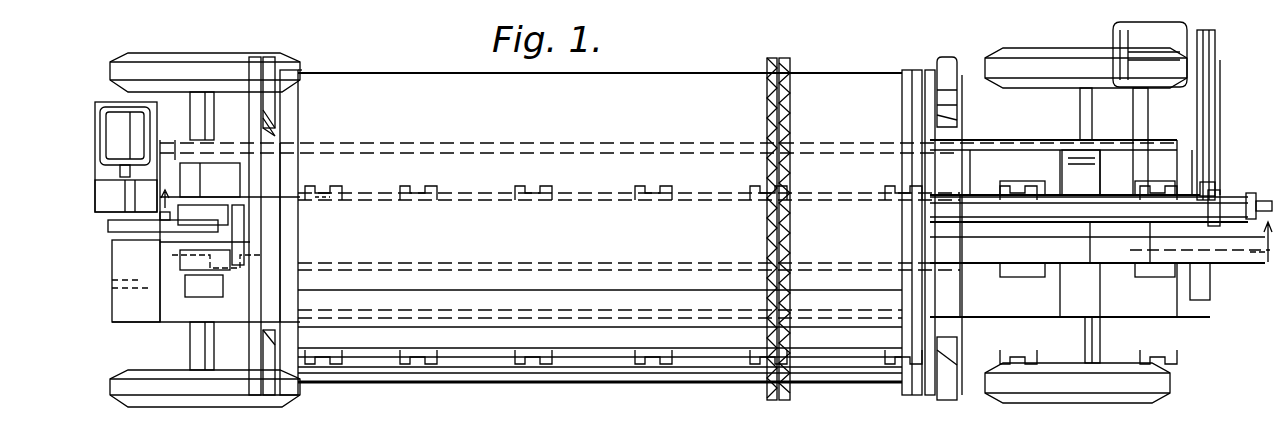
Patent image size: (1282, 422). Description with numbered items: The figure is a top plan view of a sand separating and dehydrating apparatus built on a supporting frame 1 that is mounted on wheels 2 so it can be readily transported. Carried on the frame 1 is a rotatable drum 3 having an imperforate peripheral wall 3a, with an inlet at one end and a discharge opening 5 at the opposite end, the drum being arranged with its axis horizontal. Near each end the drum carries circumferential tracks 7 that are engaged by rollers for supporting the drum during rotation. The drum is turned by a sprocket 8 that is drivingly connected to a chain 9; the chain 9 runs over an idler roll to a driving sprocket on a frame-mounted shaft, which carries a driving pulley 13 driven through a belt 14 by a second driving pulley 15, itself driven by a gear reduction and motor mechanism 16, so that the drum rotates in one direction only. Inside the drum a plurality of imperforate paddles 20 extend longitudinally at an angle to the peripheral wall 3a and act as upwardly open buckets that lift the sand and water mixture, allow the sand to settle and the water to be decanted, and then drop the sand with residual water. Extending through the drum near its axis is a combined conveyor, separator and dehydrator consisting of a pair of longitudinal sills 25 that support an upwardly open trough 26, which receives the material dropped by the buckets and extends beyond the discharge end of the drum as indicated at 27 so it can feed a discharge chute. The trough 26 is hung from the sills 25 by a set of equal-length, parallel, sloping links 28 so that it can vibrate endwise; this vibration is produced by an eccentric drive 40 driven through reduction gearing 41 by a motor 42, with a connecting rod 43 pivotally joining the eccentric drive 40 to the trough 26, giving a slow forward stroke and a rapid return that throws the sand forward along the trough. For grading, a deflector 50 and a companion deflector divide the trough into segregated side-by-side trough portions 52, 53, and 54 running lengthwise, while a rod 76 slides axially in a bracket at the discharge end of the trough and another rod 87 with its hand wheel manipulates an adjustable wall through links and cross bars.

The supporting frame 1 is at (1004, 140).
The wheels 2 is at (196, 52).
The rotatable drum 3 is at (370, 73).
The imperforate peripheral wall 3a is at (602, 420).
The discharge opening 5 is at (1256, 262).
The circumferential tracks 7 is at (300, 73).
The sprocket 8 is at (784, 66).
The chain 9 is at (766, 66).
The driving pulley 13 is at (1216, 178).
The belt 14 is at (1210, 120).
The driving pulley 15 is at (1216, 48).
The gear reduction and motor mechanism 16 is at (1114, 32).
The imperforate paddles 20 is at (492, 420).
The longitudinal sills 25 is at (196, 198).
The trough 26 is at (454, 190).
The trough extension 27 is at (1240, 265).
The links 28 is at (660, 188).
The eccentric drive 40 is at (110, 225).
The reduction gearing 41 is at (108, 196).
The motor 42 is at (105, 131).
The connecting rod 43 is at (118, 240).
The deflector 50 is at (1228, 268).
The trough portion 52 is at (1205, 281).
The trough portion 53 is at (1220, 202).
The trough portion 54 is at (1200, 165).
The rod 76 is at (1100, 222).
The rod 87 is at (1075, 195).